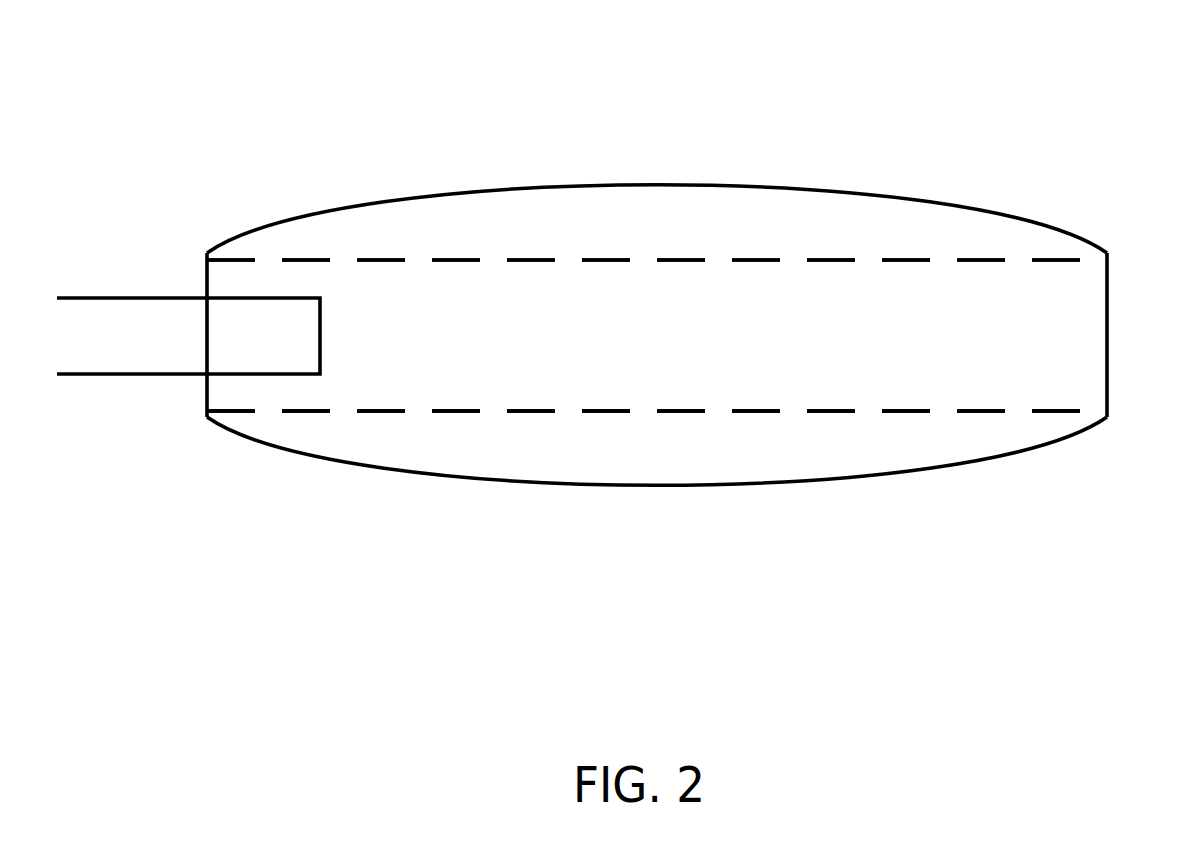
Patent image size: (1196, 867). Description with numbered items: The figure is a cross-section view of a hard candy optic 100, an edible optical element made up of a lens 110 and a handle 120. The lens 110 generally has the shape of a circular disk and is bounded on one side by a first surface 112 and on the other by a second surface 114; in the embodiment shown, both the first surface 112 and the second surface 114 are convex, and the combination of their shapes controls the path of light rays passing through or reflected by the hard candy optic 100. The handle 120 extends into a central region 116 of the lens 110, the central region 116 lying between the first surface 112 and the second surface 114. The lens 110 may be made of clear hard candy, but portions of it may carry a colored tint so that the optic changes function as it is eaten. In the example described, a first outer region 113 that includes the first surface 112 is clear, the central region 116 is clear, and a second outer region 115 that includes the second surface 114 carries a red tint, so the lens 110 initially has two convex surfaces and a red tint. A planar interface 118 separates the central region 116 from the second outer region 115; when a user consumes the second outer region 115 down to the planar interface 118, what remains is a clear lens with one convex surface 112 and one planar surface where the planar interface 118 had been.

The hard candy optic 100 is at (874, 96).
The lens 110 is at (367, 203).
The first surface 112 is at (642, 185).
The first outer region 113 is at (879, 224).
The second surface 114 is at (658, 487).
The second outer region 115 is at (890, 466).
The central region 116 is at (1031, 348).
The planar interface 118 is at (526, 412).
The handle 120 is at (115, 297).